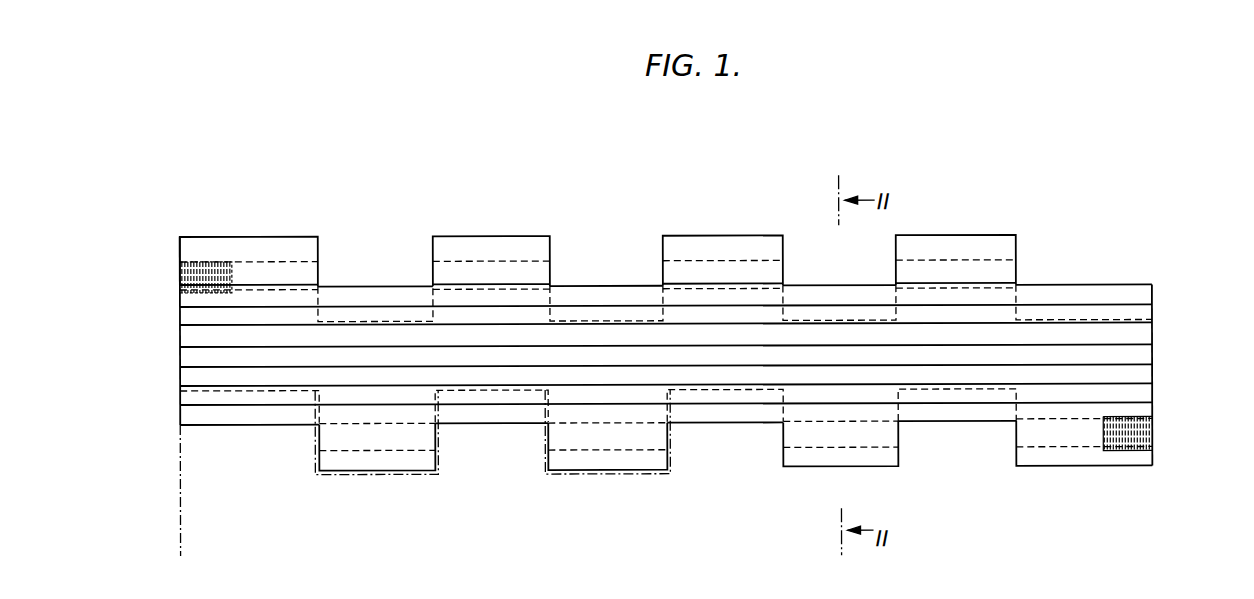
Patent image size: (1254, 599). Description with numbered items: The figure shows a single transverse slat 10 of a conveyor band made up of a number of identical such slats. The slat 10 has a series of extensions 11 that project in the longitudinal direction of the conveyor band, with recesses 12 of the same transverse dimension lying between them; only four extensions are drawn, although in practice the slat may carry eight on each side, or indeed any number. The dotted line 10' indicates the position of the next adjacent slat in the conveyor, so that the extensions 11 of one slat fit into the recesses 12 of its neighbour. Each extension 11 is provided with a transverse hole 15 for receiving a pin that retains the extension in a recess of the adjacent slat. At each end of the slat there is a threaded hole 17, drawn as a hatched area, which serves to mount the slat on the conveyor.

The transverse slat 10 is at (698, 368).
The dotted line 10' is at (492, 463).
The extension 11 is at (760, 235).
The recess 12 is at (722, 428).
The transverse hole 15 is at (902, 443).
The threaded hole 17 is at (208, 258).